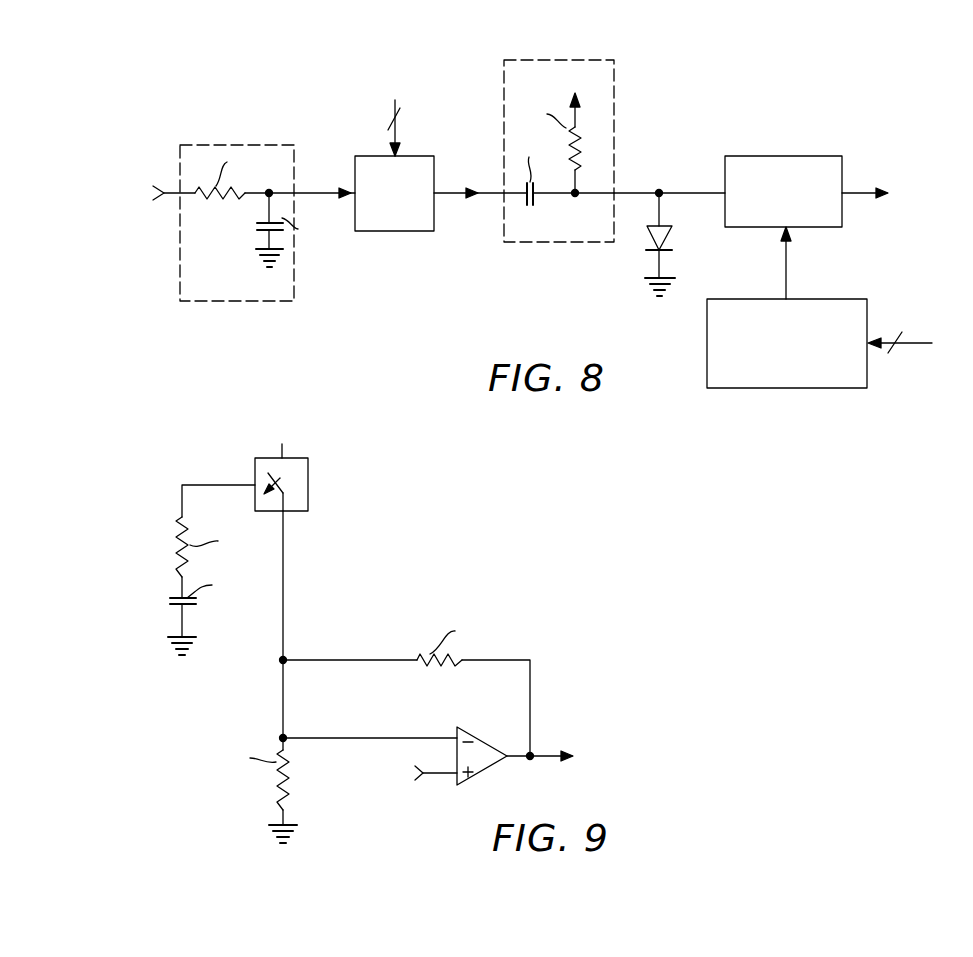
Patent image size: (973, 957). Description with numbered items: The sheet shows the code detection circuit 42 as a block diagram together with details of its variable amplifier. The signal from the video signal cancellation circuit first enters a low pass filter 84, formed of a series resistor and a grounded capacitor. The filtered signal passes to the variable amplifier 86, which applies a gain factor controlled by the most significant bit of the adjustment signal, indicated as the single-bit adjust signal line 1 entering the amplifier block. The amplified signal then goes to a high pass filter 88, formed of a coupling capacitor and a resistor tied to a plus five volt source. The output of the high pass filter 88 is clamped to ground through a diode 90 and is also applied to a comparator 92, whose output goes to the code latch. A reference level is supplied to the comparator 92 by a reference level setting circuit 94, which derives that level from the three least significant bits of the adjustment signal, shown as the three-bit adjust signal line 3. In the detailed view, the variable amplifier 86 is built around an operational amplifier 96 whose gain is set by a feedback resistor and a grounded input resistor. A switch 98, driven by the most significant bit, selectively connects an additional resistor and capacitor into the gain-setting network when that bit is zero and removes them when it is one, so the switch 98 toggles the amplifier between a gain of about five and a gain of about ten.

In FIG. 8, the code detection circuit 42 is at (855, 78).
In FIG. 8, the low pass filter 84 is at (232, 146).
In FIG. 8, the variable amplifier 86 is at (418, 156).
In FIG. 9, the variable amplifier 86 is at (178, 464).
In FIG. 8, the high pass filter 88 is at (555, 60).
In FIG. 8, the diode 90 is at (668, 236).
In FIG. 8, the comparator 92 is at (782, 156).
In FIG. 8, the reference level setting circuit 94 is at (707, 345).
In FIG. 9, the operational amplifier 96 is at (481, 739).
In FIG. 9, the switch 98 is at (308, 484).
In FIG. 8, the adjust signal line to variable amplifier 1 is at (400, 128).
In FIG. 8, the adjust signal line to reference level setting 3 is at (900, 331).